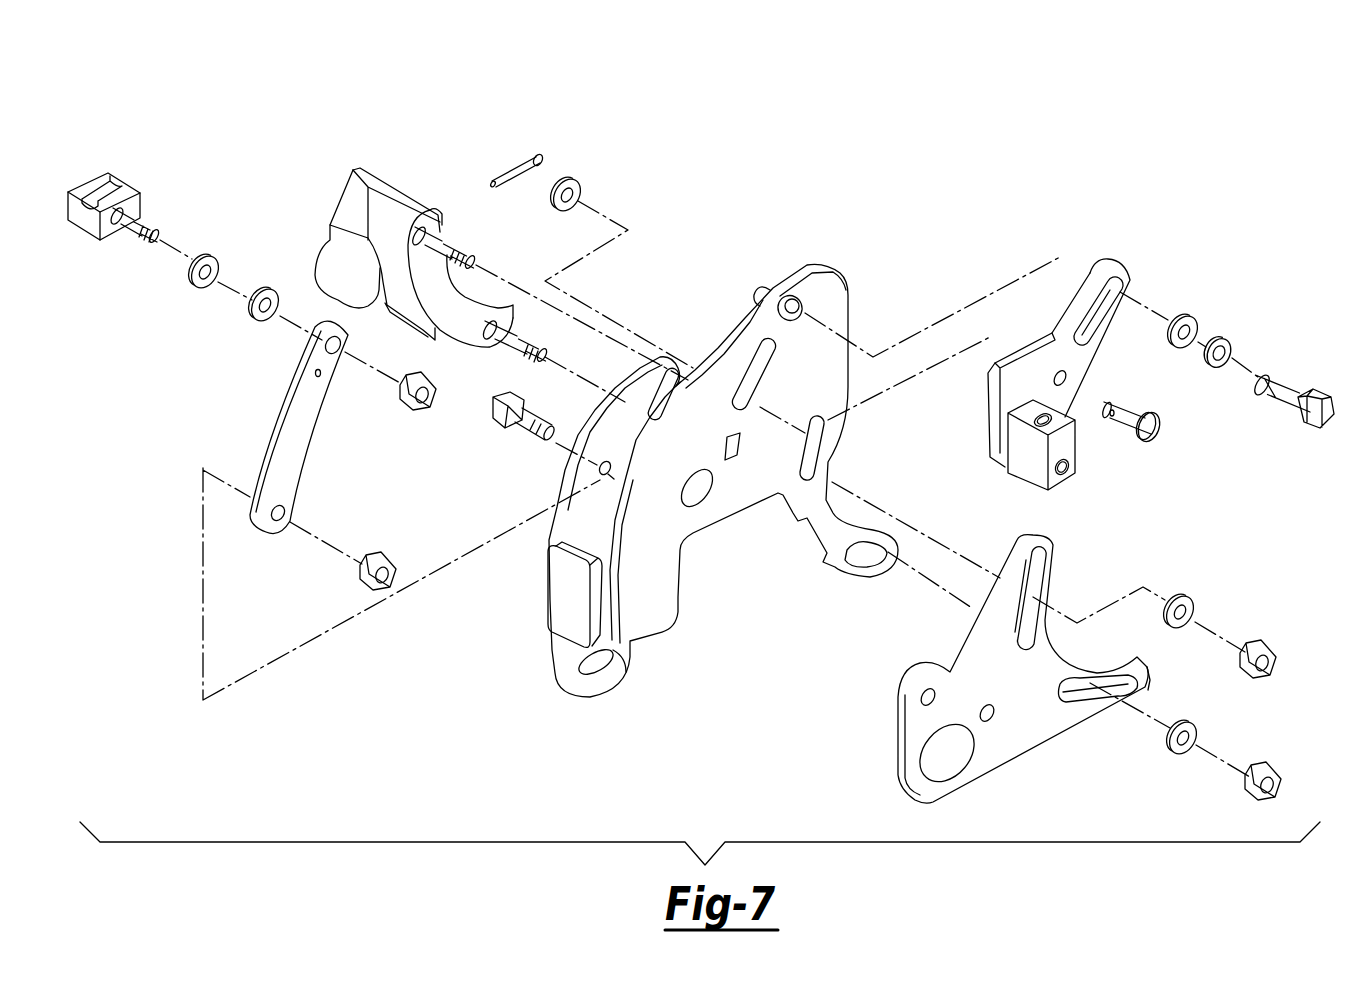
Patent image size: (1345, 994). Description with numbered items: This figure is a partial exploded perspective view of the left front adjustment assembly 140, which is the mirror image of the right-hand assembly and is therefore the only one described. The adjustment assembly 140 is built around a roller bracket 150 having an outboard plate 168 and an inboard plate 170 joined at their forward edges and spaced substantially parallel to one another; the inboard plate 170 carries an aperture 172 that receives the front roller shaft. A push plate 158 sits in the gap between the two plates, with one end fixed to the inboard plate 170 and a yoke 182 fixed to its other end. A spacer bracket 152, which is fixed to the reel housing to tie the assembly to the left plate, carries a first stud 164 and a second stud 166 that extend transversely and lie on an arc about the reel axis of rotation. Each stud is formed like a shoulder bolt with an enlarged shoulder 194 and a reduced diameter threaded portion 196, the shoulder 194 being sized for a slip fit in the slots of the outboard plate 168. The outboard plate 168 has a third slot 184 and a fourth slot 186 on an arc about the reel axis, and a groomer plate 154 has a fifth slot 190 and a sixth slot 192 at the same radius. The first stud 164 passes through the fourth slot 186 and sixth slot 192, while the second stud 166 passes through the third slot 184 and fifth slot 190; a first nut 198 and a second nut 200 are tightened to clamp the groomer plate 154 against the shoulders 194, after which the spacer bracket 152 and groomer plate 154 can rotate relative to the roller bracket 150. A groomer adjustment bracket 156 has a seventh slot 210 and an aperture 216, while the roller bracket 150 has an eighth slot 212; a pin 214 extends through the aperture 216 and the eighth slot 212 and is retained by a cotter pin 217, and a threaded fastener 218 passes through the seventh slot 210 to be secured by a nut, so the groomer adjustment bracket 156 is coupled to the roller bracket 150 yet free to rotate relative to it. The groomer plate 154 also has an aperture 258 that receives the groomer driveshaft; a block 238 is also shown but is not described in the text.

The left front adjustment assembly 140 is at (772, 150).
The roller bracket 150 is at (723, 454).
The spacer bracket 152 is at (425, 232).
The groomer plate 154 is at (1024, 676).
The groomer adjustment bracket 156 is at (1068, 356).
The push plate 158 is at (262, 410).
The first stud 164 is at (458, 212).
The second stud 166 is at (515, 356).
The outboard plate 168 is at (807, 265).
The inboard plate 170 is at (652, 354).
The aperture 172 is at (612, 688).
The yoke 182 is at (118, 172).
The third slot 184 is at (868, 562).
The fourth slot 186 is at (826, 450).
The fifth slot 190 is at (1100, 696).
The sixth slot 192 is at (1046, 565).
The shoulder 194 is at (477, 214).
The threaded portion 196 is at (478, 254).
The first nut 198 is at (1260, 645).
The second nut 200 is at (1248, 790).
The seventh slot 210 is at (1098, 304).
The eighth slot 212 is at (762, 372).
The pin 214 is at (1127, 422).
The aperture 216 is at (1056, 372).
The cotter pin 217 is at (540, 156).
The threaded fastener 218 is at (1286, 390).
The mounting block 238 is at (1025, 458).
The aperture 258 is at (965, 770).